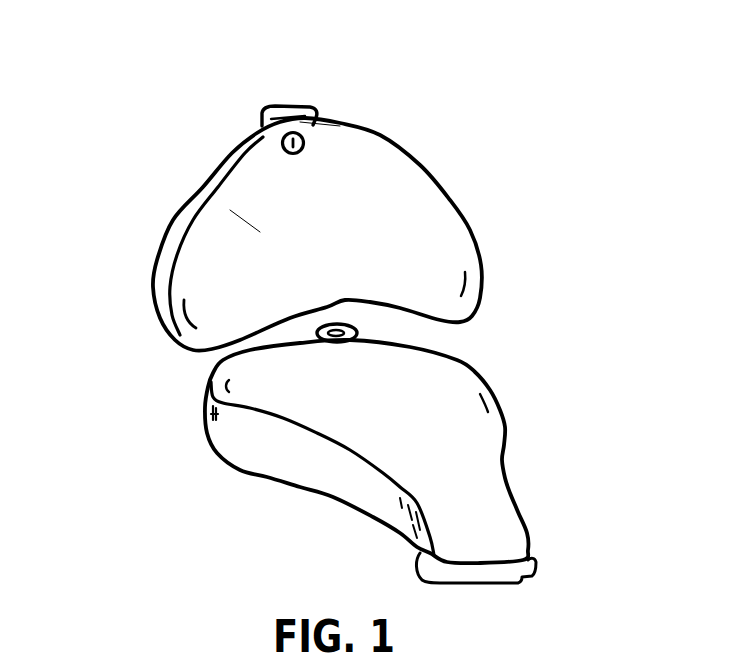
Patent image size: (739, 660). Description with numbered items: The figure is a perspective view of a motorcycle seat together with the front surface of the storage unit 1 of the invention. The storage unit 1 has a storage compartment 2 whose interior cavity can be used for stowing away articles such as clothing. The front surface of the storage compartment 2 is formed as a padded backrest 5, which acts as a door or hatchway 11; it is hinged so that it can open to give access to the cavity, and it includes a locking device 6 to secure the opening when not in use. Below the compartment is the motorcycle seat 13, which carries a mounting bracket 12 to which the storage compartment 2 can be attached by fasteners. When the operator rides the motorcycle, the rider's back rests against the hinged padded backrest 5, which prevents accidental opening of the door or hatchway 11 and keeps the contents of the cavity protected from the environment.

The storage unit 1 is at (658, 252).
The storage compartment 2 is at (420, 220).
The padded backrest 5 is at (370, 180).
The locking device 6 is at (284, 148).
The door or hatchway 11 is at (265, 232).
The mounting bracket 12 is at (343, 343).
The seat 13 is at (273, 453).